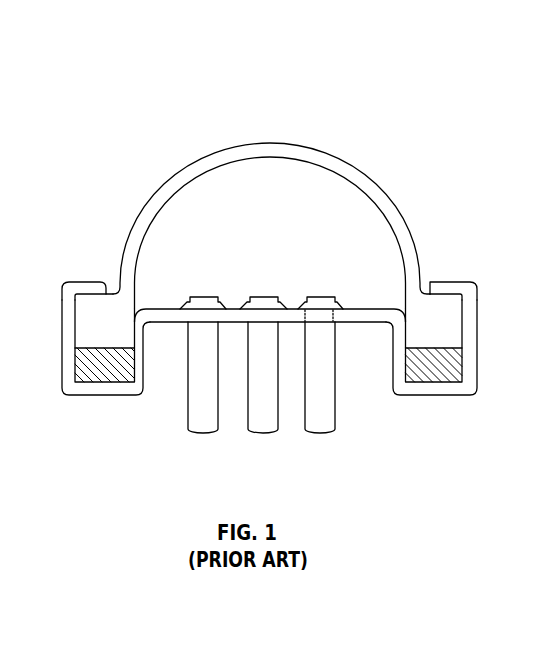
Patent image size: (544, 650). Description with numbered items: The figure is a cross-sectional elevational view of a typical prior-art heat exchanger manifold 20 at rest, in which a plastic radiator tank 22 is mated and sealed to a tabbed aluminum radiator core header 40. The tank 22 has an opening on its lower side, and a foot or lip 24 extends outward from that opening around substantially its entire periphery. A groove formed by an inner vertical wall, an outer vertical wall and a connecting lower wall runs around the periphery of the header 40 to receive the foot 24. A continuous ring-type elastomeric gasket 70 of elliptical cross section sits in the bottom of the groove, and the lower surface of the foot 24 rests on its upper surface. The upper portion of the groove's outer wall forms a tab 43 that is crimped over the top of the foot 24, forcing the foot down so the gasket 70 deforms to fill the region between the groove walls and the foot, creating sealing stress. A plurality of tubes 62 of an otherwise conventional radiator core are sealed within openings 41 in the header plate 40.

The heat exchanger manifold 20 is at (112, 116).
The tank 22 is at (332, 158).
The foot or lip 24 is at (112, 314).
The header 40 is at (230, 313).
The openings 41 is at (333, 318).
The tab 43 is at (91, 287).
The tubes 62 is at (327, 413).
The elastomeric gasket 70 is at (97, 380).